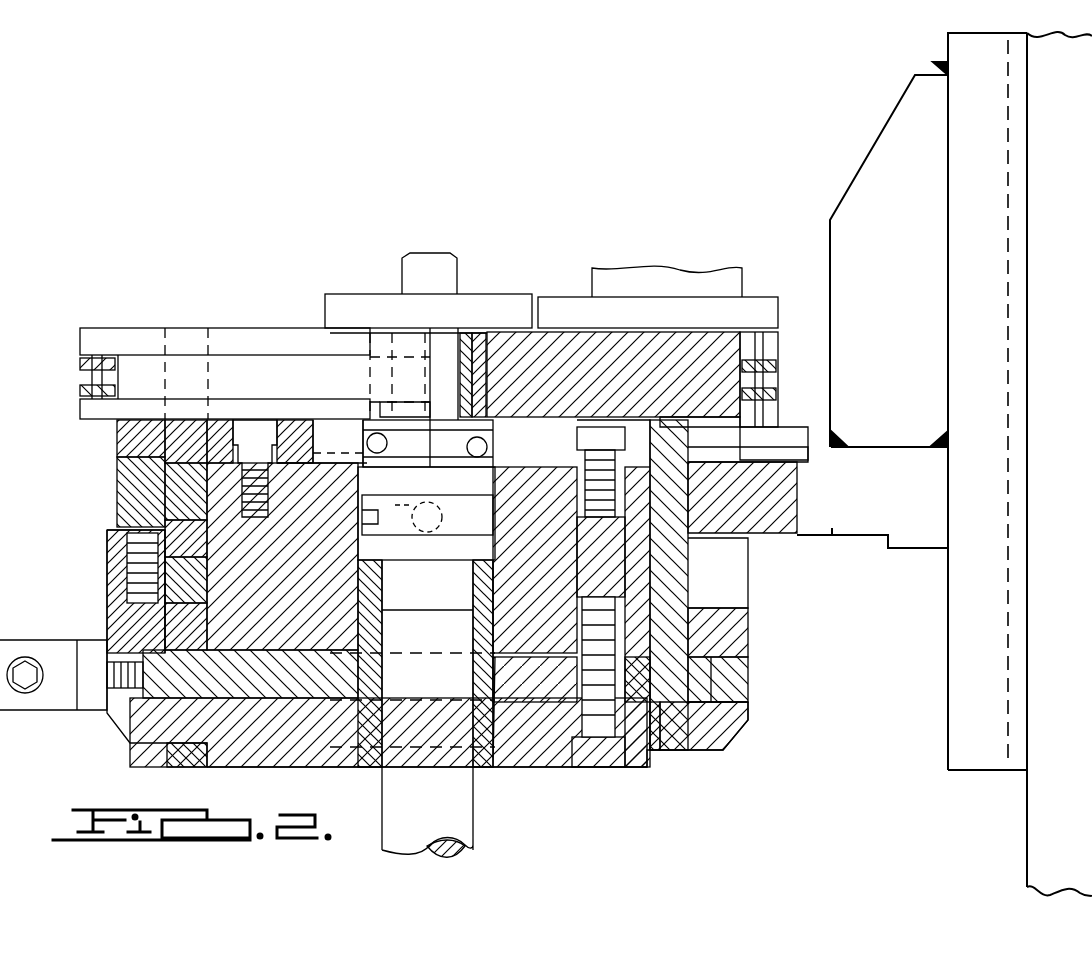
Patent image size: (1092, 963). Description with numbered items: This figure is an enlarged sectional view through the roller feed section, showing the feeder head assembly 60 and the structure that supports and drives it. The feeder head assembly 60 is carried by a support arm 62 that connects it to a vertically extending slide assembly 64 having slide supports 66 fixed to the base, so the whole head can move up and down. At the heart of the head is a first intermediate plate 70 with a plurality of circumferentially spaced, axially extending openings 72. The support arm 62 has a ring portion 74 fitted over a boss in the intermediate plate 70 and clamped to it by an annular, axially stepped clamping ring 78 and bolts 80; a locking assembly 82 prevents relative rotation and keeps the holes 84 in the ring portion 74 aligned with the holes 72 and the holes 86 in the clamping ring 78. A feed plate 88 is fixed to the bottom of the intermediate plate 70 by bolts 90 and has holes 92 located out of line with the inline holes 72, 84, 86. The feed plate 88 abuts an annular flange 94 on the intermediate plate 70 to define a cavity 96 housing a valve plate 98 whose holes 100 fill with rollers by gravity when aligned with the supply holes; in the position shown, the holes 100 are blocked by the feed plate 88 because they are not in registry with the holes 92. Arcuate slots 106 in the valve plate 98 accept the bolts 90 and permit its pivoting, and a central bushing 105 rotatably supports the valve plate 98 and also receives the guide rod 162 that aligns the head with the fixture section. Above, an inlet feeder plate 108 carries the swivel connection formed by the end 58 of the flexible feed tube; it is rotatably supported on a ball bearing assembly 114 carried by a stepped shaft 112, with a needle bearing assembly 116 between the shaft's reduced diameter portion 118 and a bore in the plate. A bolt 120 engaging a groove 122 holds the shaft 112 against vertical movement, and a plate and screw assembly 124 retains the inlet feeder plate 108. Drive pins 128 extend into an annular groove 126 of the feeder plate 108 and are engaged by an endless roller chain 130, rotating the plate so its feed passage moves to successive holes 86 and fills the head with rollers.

The end of flexible feed tube 58 is at (675, 268).
The feeder head assembly 60 is at (745, 325).
The support arm 62 is at (832, 537).
The slide assembly 64 is at (938, 225).
The slide supports 66 is at (1040, 155).
The first intermediate plate 70 is at (750, 597).
The openings 72 is at (682, 578).
The ring portion 74 is at (740, 495).
The clamping ring 78 is at (297, 437).
The bolts 80 is at (247, 432).
The locking assembly 82 is at (108, 548).
The holes 84 is at (682, 508).
The holes 86 is at (683, 437).
The feed plate 88 is at (733, 742).
The bolts 90 is at (590, 768).
The holes 92 is at (168, 745).
The annular flange 94 is at (740, 702).
The cavity 96 is at (294, 660).
The valve plate 98 is at (230, 660).
The holes 100 is at (742, 678).
The bushing 105 is at (488, 768).
The arcuate slots 106 is at (576, 678).
The inlet feeder plate 108 is at (545, 348).
The stepped shaft 112 is at (465, 562).
The ball bearing assembly 114 is at (498, 488).
The needle bearing assembly 116 is at (486, 388).
The reduced diameter portion 118 is at (472, 358).
The bolt 120 is at (365, 512).
The groove 122 is at (360, 530).
The plate and screw assembly 124 is at (485, 300).
The annular groove 126 is at (778, 396).
The drive pins 128 is at (770, 385).
The endless roller chain 130 is at (780, 370).
The guide rod 162 is at (400, 835).